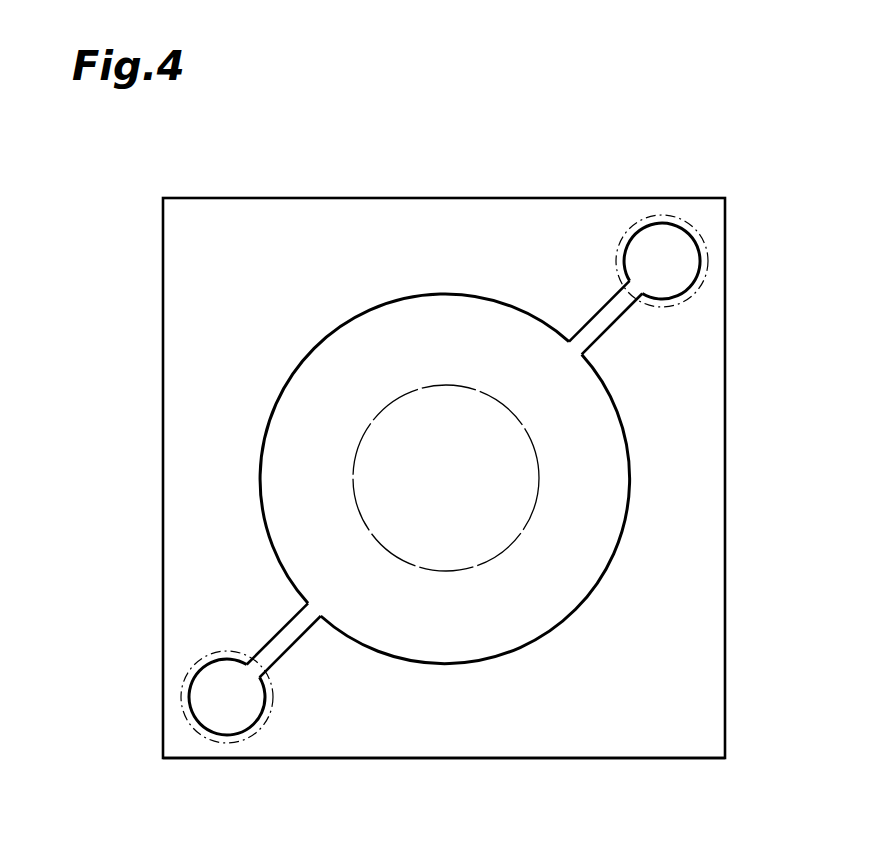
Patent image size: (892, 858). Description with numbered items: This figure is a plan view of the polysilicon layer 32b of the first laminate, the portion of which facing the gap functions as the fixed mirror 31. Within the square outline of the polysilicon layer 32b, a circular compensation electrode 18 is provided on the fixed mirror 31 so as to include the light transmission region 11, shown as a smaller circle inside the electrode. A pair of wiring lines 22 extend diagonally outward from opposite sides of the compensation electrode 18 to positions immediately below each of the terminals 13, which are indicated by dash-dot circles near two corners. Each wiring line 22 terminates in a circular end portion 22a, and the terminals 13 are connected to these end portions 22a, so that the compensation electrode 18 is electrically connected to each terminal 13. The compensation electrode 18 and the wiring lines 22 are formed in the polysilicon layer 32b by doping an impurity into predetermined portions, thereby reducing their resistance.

The light transmission region 11 is at (458, 571).
The terminal 13 is at (689, 220).
The compensation electrode 18 is at (448, 302).
The wiring line 22 is at (620, 318).
The end portion 22a is at (684, 259).
The fixed mirror 31 is at (382, 197).
The polysilicon layer 32b is at (512, 742).